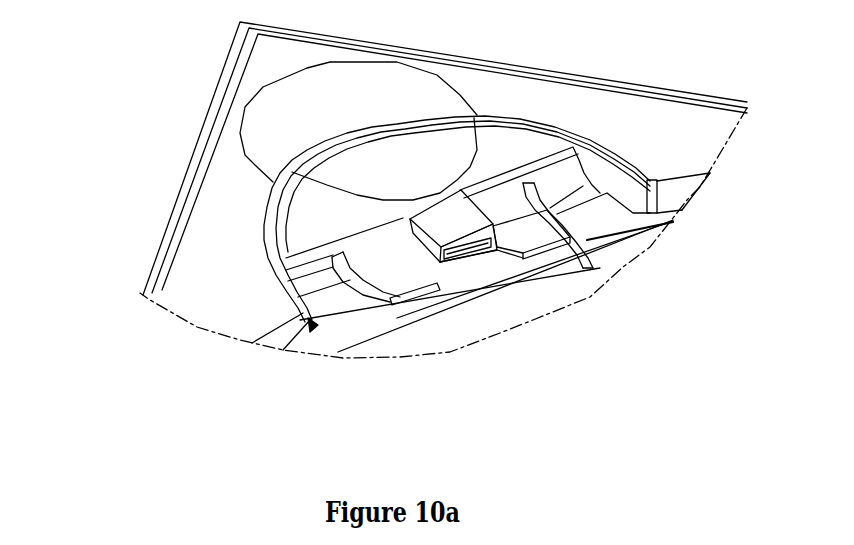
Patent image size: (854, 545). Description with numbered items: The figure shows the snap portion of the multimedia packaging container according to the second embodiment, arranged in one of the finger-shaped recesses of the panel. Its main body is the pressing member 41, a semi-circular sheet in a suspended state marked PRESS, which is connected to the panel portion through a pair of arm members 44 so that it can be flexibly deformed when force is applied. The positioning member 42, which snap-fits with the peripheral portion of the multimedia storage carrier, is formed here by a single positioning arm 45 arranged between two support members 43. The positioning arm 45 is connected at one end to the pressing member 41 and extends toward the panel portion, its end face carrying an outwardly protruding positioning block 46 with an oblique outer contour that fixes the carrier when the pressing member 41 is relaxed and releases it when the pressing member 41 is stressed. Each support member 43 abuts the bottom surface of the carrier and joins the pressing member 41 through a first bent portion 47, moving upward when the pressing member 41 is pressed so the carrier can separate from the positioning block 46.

The pressing member 41 is at (458, 220).
The positioning member 42 is at (412, 202).
The support member 43 is at (388, 285).
The arm members 44 is at (557, 196).
The positioning arm 45 is at (470, 228).
The positioning block 46 is at (475, 258).
The first bent portion 47 is at (367, 257).